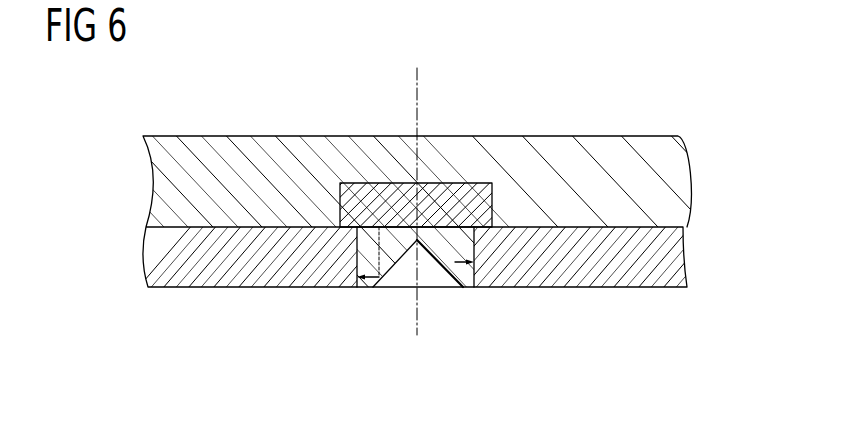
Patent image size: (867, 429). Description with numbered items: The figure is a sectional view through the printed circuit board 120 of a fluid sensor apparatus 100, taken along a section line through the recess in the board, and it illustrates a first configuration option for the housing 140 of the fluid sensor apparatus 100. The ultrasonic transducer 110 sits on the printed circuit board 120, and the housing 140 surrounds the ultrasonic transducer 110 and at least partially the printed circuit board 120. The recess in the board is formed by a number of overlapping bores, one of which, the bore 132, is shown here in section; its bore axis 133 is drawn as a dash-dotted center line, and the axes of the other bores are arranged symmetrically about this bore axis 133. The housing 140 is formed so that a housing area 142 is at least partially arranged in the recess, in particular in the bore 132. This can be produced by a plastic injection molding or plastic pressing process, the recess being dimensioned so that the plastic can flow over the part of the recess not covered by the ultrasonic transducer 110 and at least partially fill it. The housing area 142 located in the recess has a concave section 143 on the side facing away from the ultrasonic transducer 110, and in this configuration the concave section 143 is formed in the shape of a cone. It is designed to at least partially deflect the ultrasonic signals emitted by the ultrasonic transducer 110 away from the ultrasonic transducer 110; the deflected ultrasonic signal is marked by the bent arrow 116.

The fluid sensor apparatus 100 is at (670, 80).
The ultrasonic transducer 110 is at (378, 181).
The bent arrow 116 is at (437, 234).
The printed circuit board 120 is at (657, 257).
The bore 132 is at (378, 303).
The bore axis 133 is at (418, 80).
The housing 140 is at (240, 173).
The housing area 142 is at (465, 287).
The concave section 143 is at (433, 279).